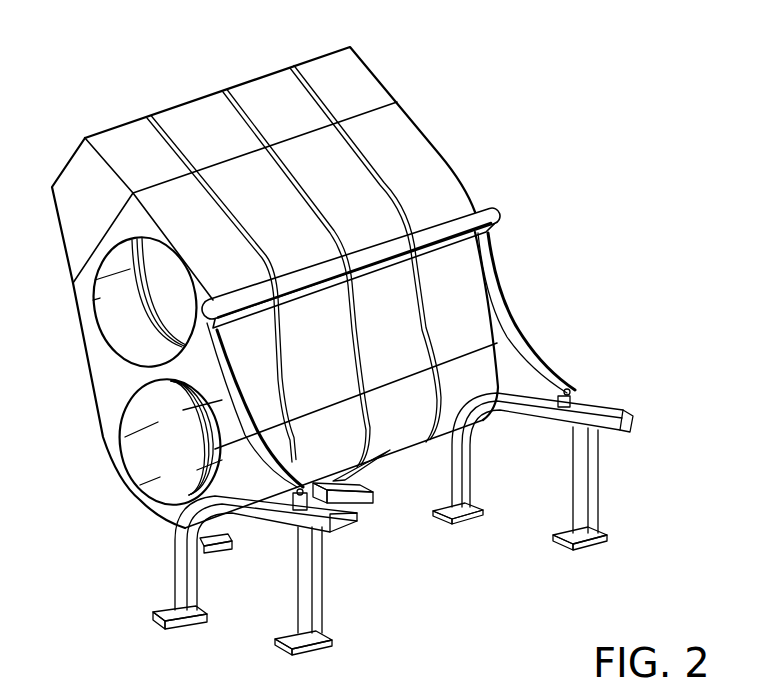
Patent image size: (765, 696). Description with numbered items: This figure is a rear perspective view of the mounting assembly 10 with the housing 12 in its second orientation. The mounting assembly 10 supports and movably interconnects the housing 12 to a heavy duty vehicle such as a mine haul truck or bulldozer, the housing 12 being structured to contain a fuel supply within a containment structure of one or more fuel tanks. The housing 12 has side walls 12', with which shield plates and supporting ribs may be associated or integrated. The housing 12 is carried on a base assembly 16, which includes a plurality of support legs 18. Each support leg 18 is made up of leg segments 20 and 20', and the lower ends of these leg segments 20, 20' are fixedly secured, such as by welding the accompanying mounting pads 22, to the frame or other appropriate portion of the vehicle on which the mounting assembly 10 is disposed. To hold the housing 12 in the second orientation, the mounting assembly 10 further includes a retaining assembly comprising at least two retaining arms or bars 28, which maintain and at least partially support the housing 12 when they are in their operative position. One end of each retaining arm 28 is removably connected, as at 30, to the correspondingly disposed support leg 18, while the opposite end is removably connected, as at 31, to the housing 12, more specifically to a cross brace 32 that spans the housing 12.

The mounting assembly 10 is at (372, 364).
The housing 12 is at (314, 280).
The side wall 12' is at (307, 250).
The base assembly 16 is at (385, 544).
The support leg 18 is at (384, 544).
The leg segment 20 is at (359, 504).
The leg segment 20' is at (449, 539).
The mounting pad 22 is at (157, 620).
The retaining arm 28 is at (440, 371).
The removable connection 30 is at (573, 397).
The removable connection 31 is at (460, 243).
The cross brace 32 is at (382, 225).